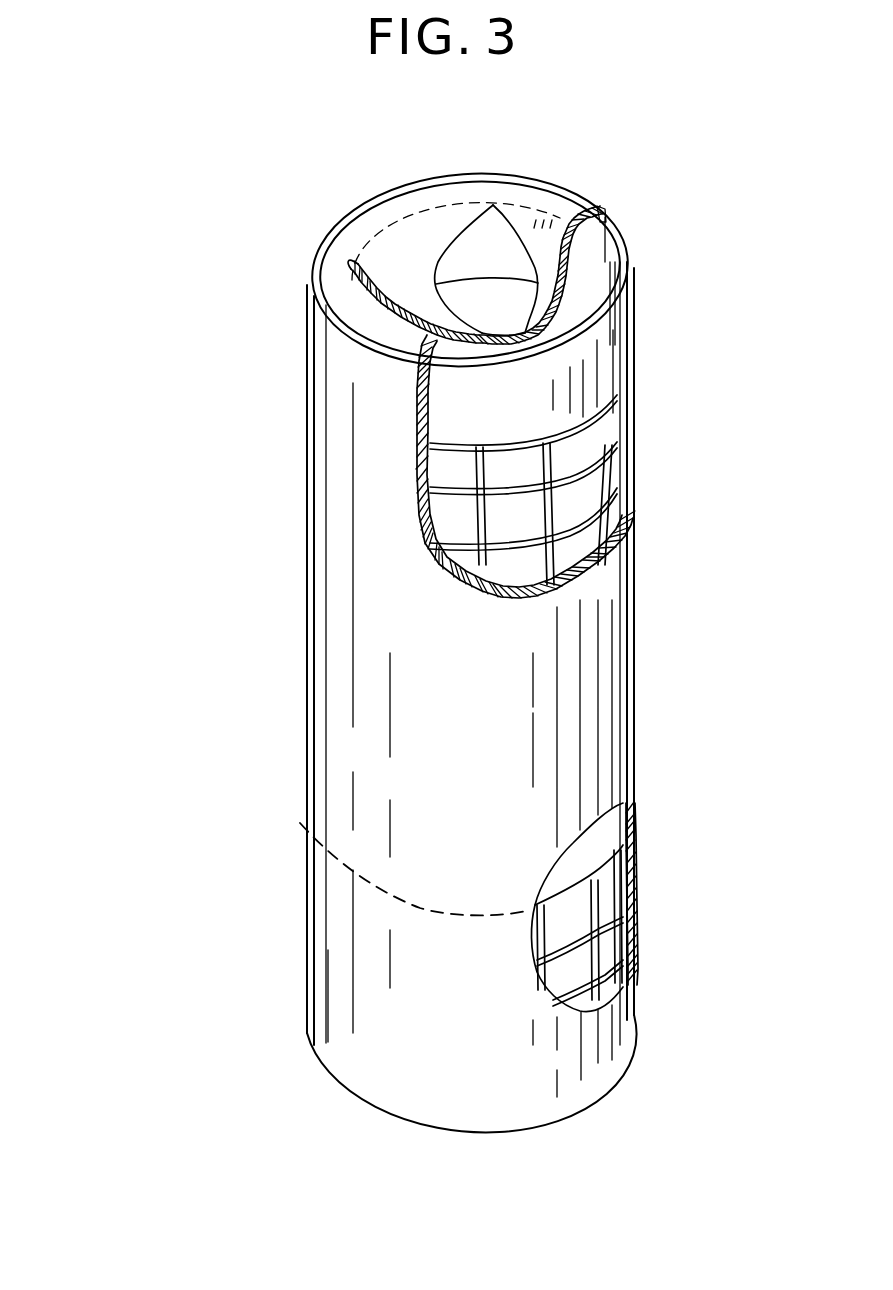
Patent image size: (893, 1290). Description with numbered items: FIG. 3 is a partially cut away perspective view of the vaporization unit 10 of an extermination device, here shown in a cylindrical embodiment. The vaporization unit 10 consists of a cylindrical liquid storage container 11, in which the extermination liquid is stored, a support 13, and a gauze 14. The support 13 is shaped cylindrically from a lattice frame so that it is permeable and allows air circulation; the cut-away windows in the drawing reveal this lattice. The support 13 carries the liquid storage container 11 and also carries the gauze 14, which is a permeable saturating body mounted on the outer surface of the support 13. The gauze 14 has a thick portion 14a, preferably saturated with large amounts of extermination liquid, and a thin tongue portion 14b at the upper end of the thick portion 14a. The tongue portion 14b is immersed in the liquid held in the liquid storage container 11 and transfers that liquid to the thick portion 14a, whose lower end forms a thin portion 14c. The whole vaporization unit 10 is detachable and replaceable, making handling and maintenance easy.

The vaporization unit 10 is at (616, 160).
The liquid storage container 11 is at (618, 337).
The support 13 is at (600, 477).
The gauze 14 is at (157, 177).
The thick portion 14a is at (292, 270).
The tongue portion 14b is at (508, 327).
The thin portion 14c is at (303, 831).